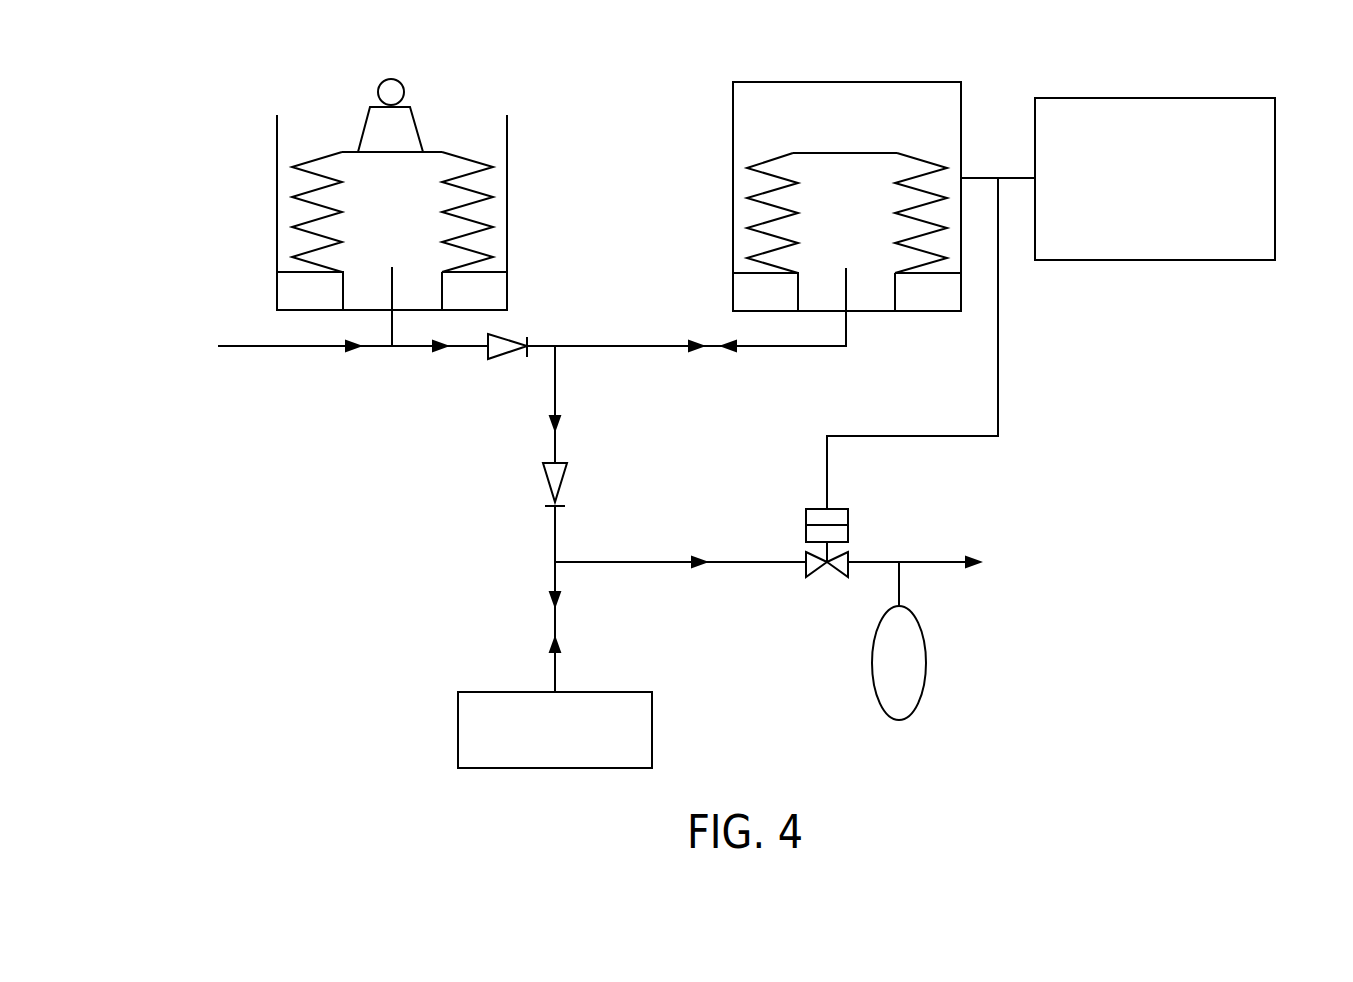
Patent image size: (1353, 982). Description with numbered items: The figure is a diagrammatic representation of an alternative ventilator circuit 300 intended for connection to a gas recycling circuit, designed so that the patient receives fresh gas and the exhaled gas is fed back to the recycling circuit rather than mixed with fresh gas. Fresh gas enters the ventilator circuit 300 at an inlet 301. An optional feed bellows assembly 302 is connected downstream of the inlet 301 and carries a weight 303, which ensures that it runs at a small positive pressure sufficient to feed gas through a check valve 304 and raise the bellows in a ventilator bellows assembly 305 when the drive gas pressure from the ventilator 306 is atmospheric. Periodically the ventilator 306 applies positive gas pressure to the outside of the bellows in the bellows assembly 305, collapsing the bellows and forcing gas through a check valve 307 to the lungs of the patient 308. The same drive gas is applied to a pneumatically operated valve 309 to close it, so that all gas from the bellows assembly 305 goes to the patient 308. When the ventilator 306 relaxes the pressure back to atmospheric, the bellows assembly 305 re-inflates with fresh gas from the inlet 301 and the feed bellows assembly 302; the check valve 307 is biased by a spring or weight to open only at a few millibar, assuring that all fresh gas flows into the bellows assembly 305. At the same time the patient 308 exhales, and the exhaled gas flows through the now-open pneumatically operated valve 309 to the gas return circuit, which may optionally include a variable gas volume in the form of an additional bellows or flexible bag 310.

The ventilator circuit 300 is at (1110, 438).
The inlet 301 is at (245, 346).
The feed bellows assembly 302 is at (508, 199).
The weight 303 is at (400, 125).
The check valve 304 is at (493, 358).
The ventilator bellows assembly 305 is at (822, 128).
The ventilator 306 is at (1135, 188).
The check valve 307 is at (563, 485).
The patient 308 is at (532, 742).
The pneumatically operated valve 309 is at (848, 520).
The flexible bag 310 is at (927, 665).